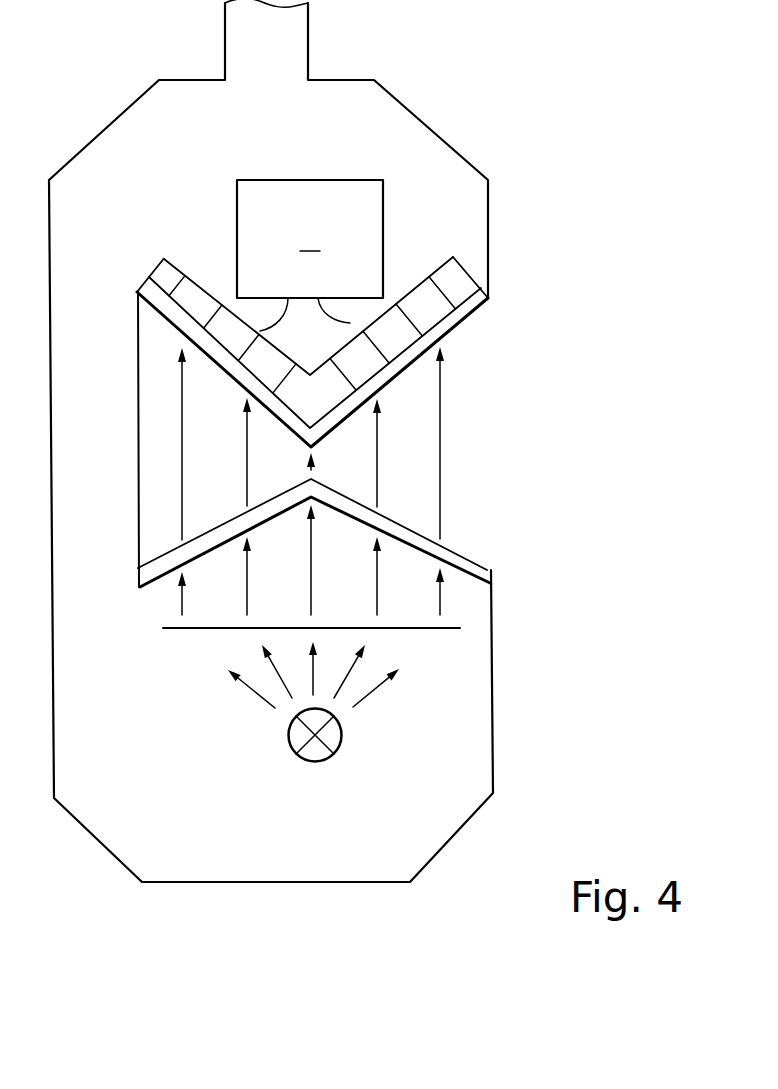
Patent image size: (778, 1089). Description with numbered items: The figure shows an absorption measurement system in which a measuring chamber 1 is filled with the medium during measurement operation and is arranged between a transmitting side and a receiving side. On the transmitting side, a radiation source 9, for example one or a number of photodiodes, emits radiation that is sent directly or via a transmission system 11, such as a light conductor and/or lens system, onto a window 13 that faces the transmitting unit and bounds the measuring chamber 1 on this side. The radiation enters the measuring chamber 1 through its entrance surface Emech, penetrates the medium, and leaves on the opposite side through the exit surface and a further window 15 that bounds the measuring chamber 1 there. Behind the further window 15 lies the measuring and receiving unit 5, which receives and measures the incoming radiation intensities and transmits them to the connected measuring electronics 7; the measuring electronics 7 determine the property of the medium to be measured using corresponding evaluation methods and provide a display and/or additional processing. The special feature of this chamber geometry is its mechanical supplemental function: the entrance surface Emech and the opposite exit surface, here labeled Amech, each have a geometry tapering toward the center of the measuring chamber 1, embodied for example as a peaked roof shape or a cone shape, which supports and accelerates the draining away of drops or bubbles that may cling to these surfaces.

The measuring chamber 1 is at (519, 436).
The measuring and receiving unit 5 is at (148, 287).
The measuring electronics 7 is at (310, 255).
The radiation source 9 is at (298, 736).
The transmission system 11 is at (176, 632).
The window 13 is at (487, 575).
The further window 15 is at (470, 305).
The mechanical output energy Amech is at (448, 333).
The entrance surface Emech is at (457, 550).